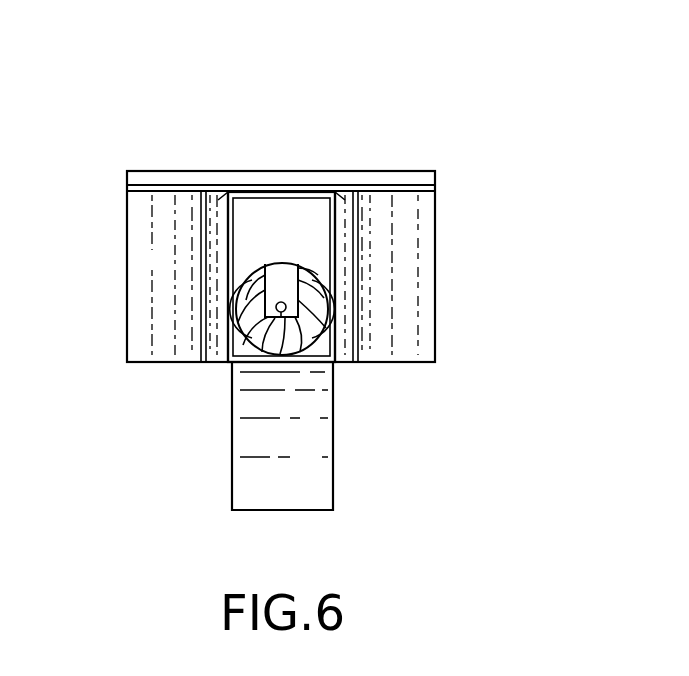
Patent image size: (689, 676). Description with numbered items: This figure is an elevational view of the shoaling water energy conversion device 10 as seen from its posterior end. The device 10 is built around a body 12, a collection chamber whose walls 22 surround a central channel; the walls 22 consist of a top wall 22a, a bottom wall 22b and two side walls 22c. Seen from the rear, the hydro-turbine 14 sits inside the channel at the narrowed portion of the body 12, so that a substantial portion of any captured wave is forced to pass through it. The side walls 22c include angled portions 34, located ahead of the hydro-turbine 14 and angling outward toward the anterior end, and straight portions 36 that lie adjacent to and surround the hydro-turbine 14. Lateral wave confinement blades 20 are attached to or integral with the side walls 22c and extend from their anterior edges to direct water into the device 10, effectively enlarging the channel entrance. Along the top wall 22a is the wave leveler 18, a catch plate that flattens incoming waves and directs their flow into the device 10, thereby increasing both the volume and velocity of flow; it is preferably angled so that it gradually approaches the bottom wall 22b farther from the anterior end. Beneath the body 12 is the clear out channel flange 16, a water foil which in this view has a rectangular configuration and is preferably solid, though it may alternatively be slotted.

The shoaling water energy conversion device 10 is at (436, 132).
The body 12 is at (412, 297).
The hydro-turbine 14 is at (258, 340).
The clear out channel flange 16 is at (313, 467).
The wave leveler 18 is at (277, 177).
The lateral wave confinement blades 20 is at (150, 340).
The walls 22 is at (345, 237).
The top wall 22a is at (417, 193).
The bottom wall 22b is at (317, 361).
The side walls 22c is at (220, 273).
The angled portions 34 is at (222, 340).
The straight portions 36 is at (230, 220).